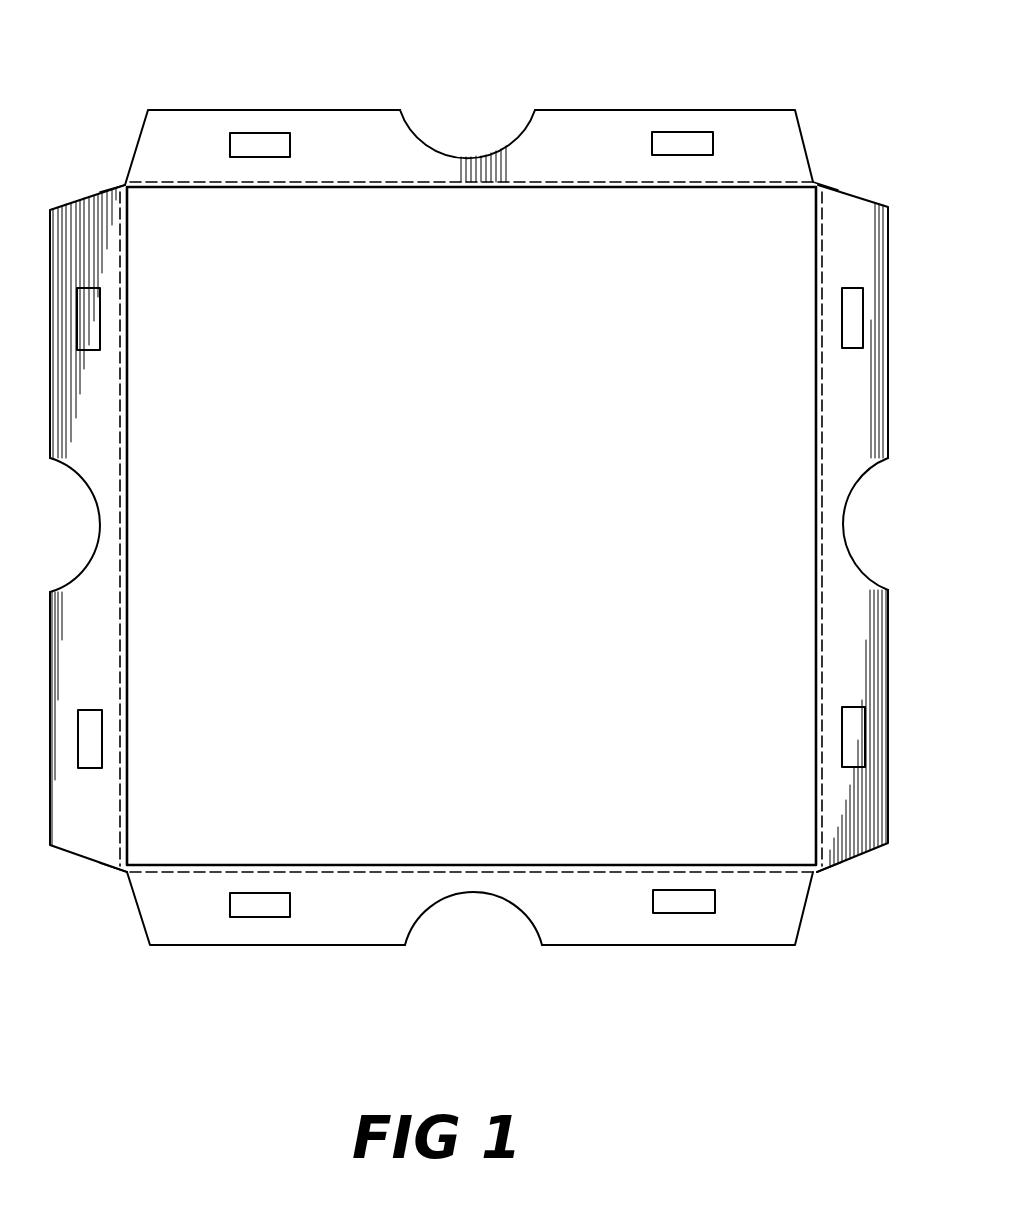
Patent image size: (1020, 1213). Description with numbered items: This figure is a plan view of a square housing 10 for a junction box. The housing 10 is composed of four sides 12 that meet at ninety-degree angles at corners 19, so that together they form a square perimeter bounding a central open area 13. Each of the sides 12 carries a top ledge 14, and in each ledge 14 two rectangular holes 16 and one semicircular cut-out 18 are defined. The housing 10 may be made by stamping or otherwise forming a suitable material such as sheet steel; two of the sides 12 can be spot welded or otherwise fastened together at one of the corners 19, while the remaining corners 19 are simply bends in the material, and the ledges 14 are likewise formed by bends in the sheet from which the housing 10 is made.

The housing 10 is at (303, 57).
The sides 12 is at (236, 188).
The open area 13 is at (500, 547).
The top ledge 14 is at (571, 130).
The rectangular holes 16 is at (268, 135).
The semicircular cut-out 18 is at (450, 152).
The corners 19 is at (125, 184).